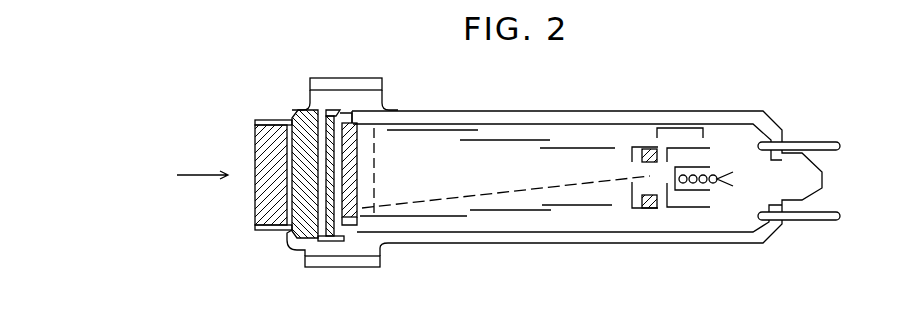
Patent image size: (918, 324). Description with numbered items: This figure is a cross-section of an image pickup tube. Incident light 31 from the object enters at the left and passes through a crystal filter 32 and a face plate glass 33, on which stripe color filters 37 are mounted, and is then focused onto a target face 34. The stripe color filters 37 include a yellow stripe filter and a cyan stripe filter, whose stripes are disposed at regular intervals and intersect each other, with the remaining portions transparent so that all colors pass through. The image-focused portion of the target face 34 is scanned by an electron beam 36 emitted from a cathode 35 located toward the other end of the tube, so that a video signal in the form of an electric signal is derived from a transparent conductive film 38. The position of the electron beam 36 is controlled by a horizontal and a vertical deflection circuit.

The incident light 31 is at (197, 178).
The crystal filter 32 is at (268, 205).
The face plate glass 33 is at (298, 240).
The target face 34 is at (362, 170).
The cathode 35 is at (683, 190).
The electron beam 36 is at (505, 197).
The stripe color filters 37 is at (293, 112).
The transparent conductive film 38 is at (338, 224).